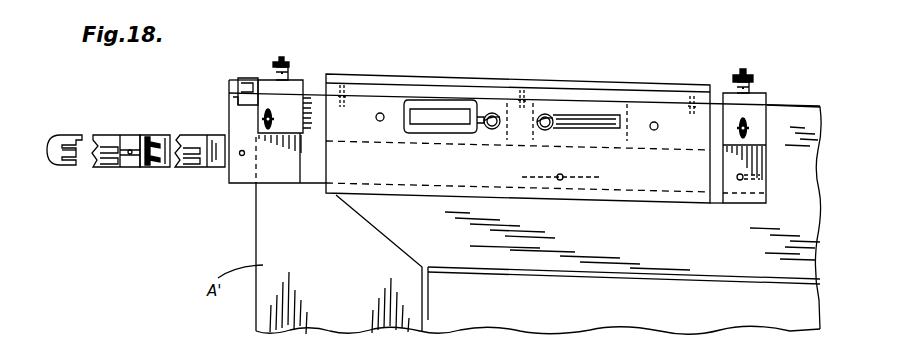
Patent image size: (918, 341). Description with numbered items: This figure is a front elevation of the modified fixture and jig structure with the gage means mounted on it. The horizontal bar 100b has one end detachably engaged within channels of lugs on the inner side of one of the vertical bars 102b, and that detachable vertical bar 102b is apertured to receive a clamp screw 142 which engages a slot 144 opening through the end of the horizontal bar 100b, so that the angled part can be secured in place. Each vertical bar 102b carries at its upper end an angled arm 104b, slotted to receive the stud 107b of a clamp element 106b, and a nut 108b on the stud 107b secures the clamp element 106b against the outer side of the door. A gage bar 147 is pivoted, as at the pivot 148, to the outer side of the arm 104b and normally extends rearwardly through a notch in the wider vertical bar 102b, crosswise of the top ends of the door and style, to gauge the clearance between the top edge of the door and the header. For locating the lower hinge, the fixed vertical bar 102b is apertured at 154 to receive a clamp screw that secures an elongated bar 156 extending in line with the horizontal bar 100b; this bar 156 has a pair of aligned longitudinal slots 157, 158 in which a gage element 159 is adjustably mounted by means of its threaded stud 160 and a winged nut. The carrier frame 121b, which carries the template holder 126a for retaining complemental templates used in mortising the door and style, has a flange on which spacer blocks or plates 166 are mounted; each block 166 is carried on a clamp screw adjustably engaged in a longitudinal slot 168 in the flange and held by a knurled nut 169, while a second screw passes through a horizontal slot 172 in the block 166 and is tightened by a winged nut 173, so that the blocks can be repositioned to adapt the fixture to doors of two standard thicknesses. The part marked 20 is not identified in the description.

The horizontal bar 100b is at (312, 180).
The vertical bar 102b is at (230, 112).
The angled arm 104b is at (780, 62).
The clamp element 106b is at (787, 82).
The stud 107b is at (284, 57).
The nut 108b is at (292, 65).
The carrier frame 121b is at (560, 92).
The template holder 126a is at (428, 80).
The clamp screw 142 is at (742, 183).
The slot 144 is at (764, 176).
The gage bar 147 is at (245, 78).
The pivot 148 is at (234, 97).
The aperture 154 is at (240, 156).
The elongated bar 156 is at (75, 133).
The slot 157 is at (155, 167).
The slot 158 is at (97, 158).
The gage element 159 is at (131, 135).
The threaded stud 160 is at (130, 168).
The block or plate 166 is at (468, 133).
The slot 168 is at (492, 113).
The knurled nut 169 is at (542, 114).
The slot 172 is at (430, 110).
The winged nut 173 is at (376, 118).
The frame 20 is at (103, 337).